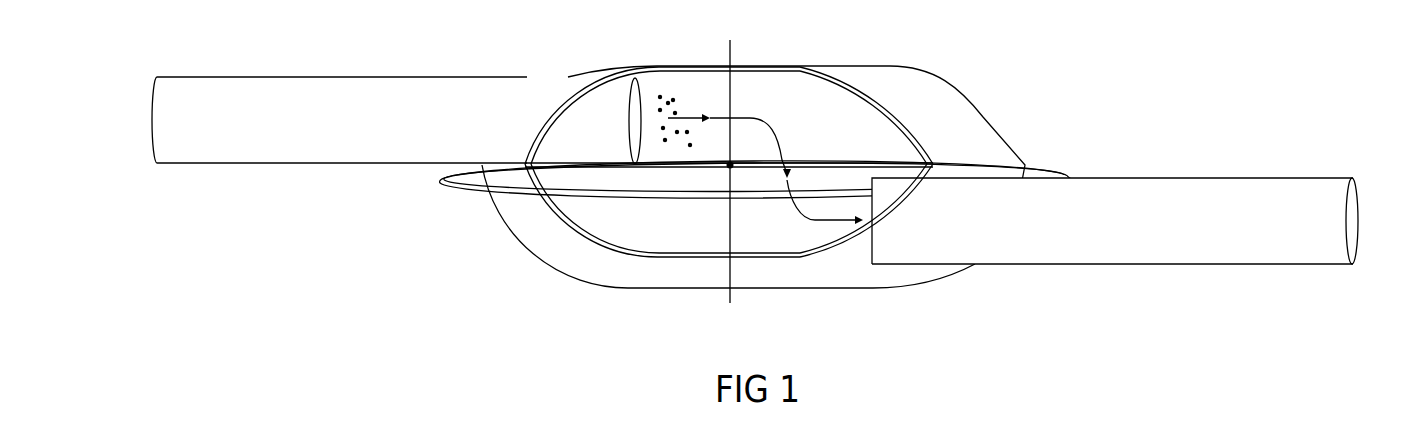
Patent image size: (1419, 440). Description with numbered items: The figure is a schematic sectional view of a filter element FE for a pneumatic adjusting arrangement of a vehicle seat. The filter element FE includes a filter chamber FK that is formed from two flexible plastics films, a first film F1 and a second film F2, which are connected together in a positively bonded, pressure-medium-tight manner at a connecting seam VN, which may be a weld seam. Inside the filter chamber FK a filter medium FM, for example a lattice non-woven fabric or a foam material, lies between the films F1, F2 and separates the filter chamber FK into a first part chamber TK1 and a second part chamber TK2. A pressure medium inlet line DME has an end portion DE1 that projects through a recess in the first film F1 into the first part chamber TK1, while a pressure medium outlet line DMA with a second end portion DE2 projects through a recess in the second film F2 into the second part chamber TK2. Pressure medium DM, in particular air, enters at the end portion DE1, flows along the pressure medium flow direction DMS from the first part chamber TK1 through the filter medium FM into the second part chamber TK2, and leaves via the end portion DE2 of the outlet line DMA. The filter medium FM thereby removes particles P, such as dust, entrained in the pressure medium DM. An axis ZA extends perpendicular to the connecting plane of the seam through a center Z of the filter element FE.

The end portion of the pressure medium inlet line DE1 is at (595, 122).
The second end portion of the pressure medium outlet line DE2 is at (870, 243).
The pressure medium flow direction DMS is at (708, 115).
The axis ZA is at (729, 158).
The first part chamber TK1 is at (790, 88).
The second part chamber TK2 is at (785, 238).
The filter chamber FK is at (882, 64).
The first film F1 is at (953, 82).
The second film F2 is at (877, 291).
The filter element FE is at (1111, 84).
The connecting seam VN is at (1053, 167).
The pressure medium DM is at (777, 134).
The pressure medium inlet line DME is at (372, 173).
The pressure medium outlet line DMA is at (1123, 243).
The filter medium FM is at (675, 170).
The center Z is at (732, 167).
The particles P is at (665, 80).